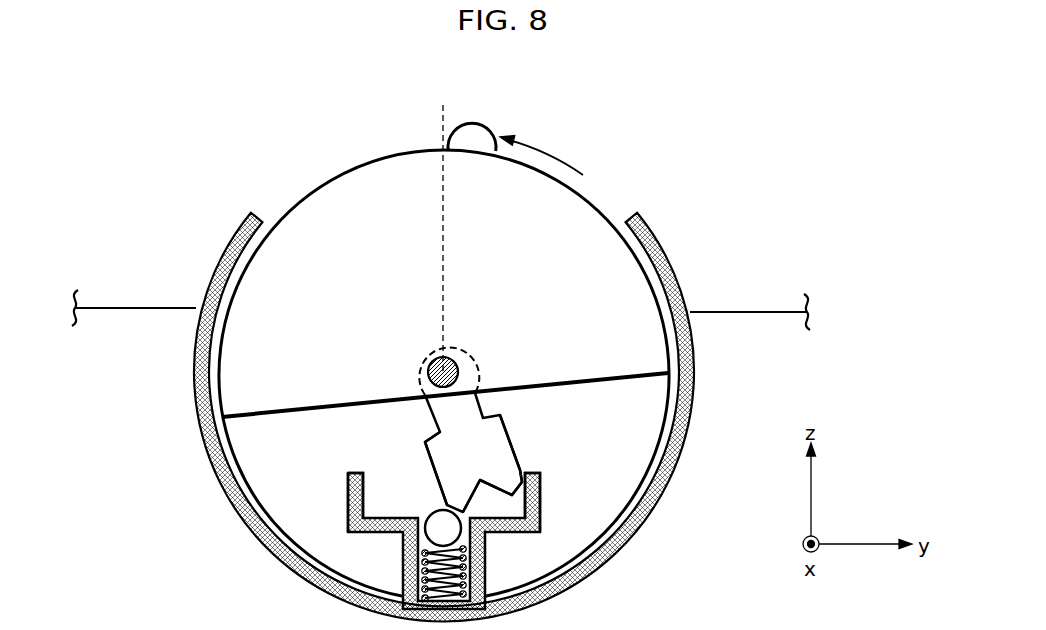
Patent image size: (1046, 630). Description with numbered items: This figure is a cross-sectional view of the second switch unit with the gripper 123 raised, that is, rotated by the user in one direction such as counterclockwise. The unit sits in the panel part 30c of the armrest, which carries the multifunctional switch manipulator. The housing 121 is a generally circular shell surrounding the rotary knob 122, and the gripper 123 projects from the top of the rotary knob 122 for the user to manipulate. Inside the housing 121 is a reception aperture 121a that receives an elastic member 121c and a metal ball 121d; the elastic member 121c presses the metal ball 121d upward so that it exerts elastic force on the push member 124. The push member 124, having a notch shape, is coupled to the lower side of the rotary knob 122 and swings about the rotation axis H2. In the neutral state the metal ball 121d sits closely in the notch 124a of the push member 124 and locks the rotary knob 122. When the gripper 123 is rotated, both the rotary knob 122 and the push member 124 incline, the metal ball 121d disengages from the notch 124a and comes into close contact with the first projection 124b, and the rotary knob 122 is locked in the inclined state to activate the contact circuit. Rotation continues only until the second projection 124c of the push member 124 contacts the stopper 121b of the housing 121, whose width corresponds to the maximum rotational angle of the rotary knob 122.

The housing 121 is at (210, 272).
The reception aperture 121a is at (403, 582).
The stopper 121b is at (348, 503).
The elastic member 121c is at (485, 572).
The metal ball 121d is at (433, 513).
The rotary knob 122 is at (562, 208).
The gripper 123 is at (480, 135).
The push member 124 is at (492, 432).
The notch 124a is at (482, 495).
The first projection 124b is at (462, 495).
The second projection 124c is at (502, 477).
The panel part 30c is at (175, 308).
The rotation axis H2 is at (466, 360).